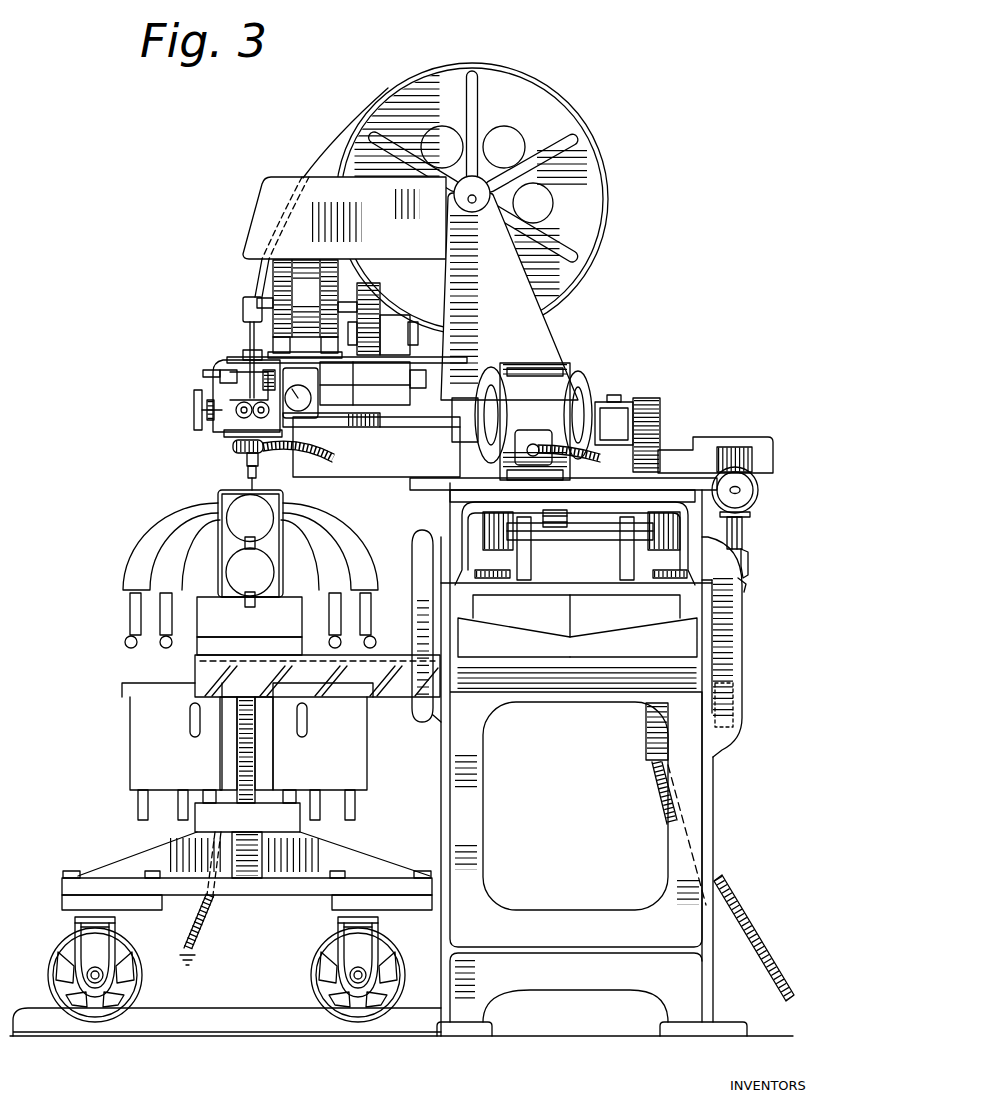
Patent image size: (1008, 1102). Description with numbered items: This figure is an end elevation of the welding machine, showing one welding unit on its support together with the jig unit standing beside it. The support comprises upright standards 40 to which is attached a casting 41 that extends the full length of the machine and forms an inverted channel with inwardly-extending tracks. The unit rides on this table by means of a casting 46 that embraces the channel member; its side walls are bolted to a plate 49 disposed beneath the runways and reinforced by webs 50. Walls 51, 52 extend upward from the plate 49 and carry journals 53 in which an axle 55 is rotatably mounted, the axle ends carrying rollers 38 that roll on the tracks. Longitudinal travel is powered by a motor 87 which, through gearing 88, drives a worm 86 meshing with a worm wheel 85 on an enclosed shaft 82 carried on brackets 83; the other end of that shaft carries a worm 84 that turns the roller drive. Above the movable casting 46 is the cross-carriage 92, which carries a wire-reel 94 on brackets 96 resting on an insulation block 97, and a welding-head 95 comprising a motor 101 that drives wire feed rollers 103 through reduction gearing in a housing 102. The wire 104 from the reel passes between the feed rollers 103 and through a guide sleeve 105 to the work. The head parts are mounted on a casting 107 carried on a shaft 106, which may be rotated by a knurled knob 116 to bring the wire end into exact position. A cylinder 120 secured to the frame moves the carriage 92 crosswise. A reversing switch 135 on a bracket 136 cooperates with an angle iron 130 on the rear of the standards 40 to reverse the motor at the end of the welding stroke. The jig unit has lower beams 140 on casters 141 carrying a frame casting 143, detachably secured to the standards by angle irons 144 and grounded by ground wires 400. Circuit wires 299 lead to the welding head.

The wire-reel 94 is at (585, 179).
The wire 104 is at (330, 152).
The motor 101 is at (275, 290).
The brackets 96 is at (509, 288).
The housing 102 is at (370, 300).
The casting 107 is at (410, 352).
The insulation block 97 is at (430, 385).
The knurled knob 116 is at (243, 310).
The welding-head 95 is at (218, 362).
The wire feed rollers 103 is at (242, 418).
The guide sleeve 105 is at (251, 478).
The shaft 106 is at (304, 412).
The circuit wires 299 is at (325, 462).
The carriage 92 is at (768, 380).
The motor 87 is at (522, 421).
The casting 41 is at (640, 465).
The casting 46 is at (640, 440).
The cylinder 120 is at (603, 488).
The gearing 88 is at (603, 493).
The journals 53 is at (475, 497).
The rollers 38 is at (488, 521).
The wall 52 is at (587, 555).
The wall 51 is at (524, 552).
The axle 55 is at (627, 540).
The plate 49 is at (547, 590).
The webs 50 is at (643, 618).
The standards 40 is at (688, 686).
The bracket 136 is at (626, 683).
The reversing switch 135 is at (658, 752).
The angle iron 130 is at (740, 712).
The worm 86 is at (752, 455).
The worm wheel 85 is at (758, 490).
The enclosed shaft 82 is at (742, 518).
The brackets 83 is at (749, 562).
The worm 84 is at (746, 580).
The angle irons 144 is at (317, 647).
The frame casting 143 is at (247, 760).
The lower beams 140 is at (280, 885).
The ground wires 400 is at (200, 918).
The casters 141 is at (100, 925).